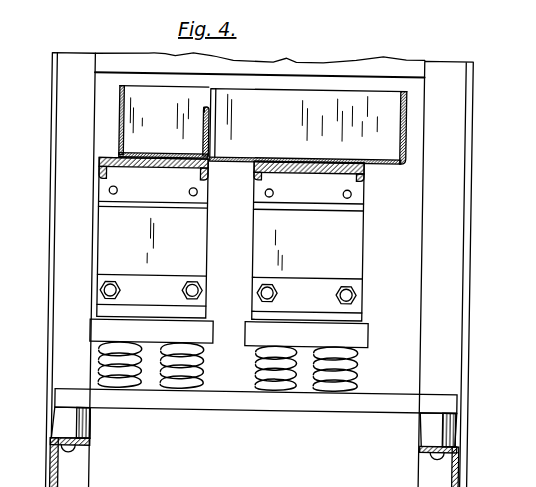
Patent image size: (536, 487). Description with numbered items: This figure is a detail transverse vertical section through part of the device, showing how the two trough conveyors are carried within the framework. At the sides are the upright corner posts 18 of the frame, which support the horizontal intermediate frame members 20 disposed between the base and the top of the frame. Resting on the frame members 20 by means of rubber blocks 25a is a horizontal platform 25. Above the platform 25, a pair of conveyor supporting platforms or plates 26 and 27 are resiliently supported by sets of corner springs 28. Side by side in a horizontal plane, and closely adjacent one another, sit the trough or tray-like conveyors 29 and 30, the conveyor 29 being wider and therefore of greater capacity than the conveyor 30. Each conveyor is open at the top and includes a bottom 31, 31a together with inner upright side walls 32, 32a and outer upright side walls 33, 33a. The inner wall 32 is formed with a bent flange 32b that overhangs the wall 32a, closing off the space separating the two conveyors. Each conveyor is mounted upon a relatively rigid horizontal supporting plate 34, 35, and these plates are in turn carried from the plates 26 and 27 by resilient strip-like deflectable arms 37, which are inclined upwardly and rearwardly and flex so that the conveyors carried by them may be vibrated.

The rear upright corner posts 18 is at (60, 281).
The horizontal intermediate frame members 20 is at (52, 469).
The horizontal platform 25 is at (241, 411).
The rubber blocks 25a is at (93, 428).
The conveyor supporting platform or plate 26 is at (369, 338).
The conveyor supporting platform or plate 27 is at (151, 331).
The corner springs 28 is at (204, 377).
The trough or tray-like conveyor 29 is at (315, 99).
The trough or tray-like conveyor 30 is at (158, 91).
The bottom 31 is at (288, 158).
The bottom 31a is at (156, 158).
The inner upright side wall 32 is at (208, 126).
The inner upright side wall 32a is at (203, 142).
The bent flange 32b is at (196, 163).
The outer upright side wall 33 is at (398, 124).
The outer upright side wall 33a is at (116, 112).
The horizontal supporting plate 34 is at (297, 167).
The horizontal supporting plate 35 is at (138, 171).
The resilient strip-like deflectable arms 37 is at (169, 237).